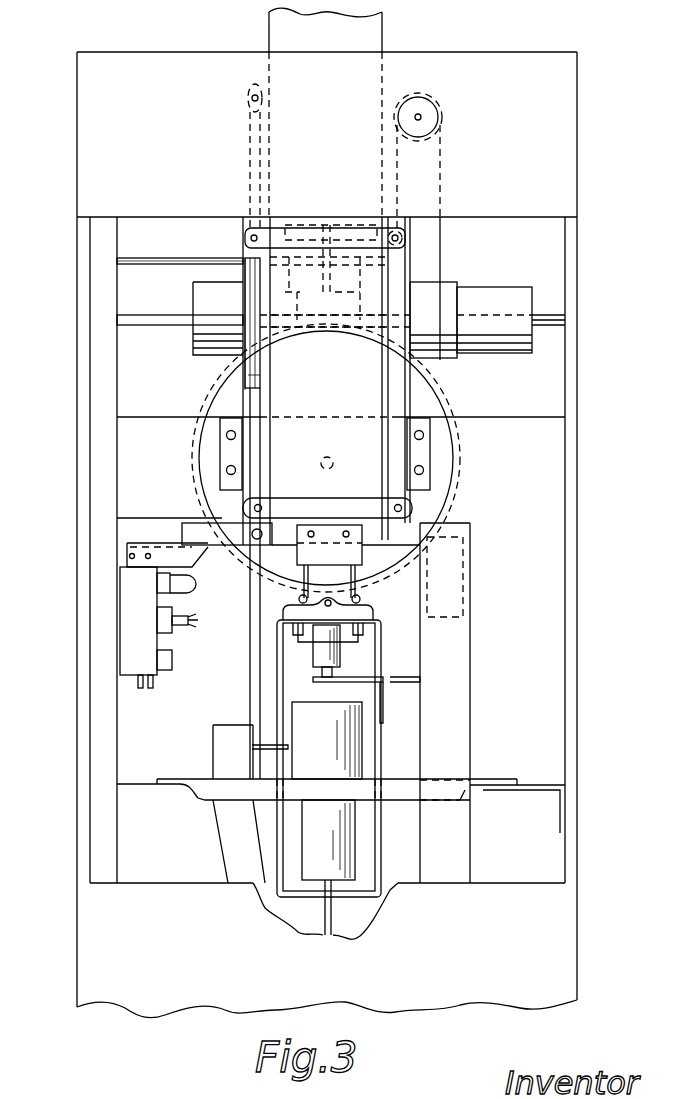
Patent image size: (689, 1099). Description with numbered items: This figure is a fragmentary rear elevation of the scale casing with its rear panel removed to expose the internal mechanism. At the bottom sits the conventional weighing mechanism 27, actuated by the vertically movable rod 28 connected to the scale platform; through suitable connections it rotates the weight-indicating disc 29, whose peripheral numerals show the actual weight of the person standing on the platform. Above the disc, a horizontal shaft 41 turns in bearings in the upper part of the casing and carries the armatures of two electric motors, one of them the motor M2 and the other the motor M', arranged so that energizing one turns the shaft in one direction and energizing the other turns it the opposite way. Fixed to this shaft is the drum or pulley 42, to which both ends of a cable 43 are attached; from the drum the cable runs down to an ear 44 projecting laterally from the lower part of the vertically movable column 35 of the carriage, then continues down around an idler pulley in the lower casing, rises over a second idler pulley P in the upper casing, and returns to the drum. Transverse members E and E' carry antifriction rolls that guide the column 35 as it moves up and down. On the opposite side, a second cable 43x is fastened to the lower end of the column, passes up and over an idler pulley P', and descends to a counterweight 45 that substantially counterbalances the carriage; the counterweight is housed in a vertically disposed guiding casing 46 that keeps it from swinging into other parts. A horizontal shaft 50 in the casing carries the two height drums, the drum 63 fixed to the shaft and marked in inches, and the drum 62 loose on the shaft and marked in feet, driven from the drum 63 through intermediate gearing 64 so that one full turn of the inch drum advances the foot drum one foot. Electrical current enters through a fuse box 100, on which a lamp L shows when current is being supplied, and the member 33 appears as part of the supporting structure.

The column 35 is at (384, 38).
The idler pulley P is at (227, 155).
The idler pulley P' is at (438, 226).
The drum 62 is at (300, 228).
The drum 63 is at (345, 240).
The intermediate gearing 64 is at (332, 228).
The transverse member E is at (399, 218).
The horizontal shaft 50 is at (162, 258).
The horizontal shaft 41 is at (162, 305).
The drum or pulley 42 is at (251, 275).
The electric motor M2 is at (468, 292).
The motor M' is at (511, 303).
The cable 43 is at (262, 411).
The second cable 43x is at (386, 426).
The weight-indicating disc 29 is at (462, 472).
The vertically movable rod 28 is at (327, 457).
The transverse member E' is at (329, 528).
The ear 44 is at (265, 521).
The guiding casing 46 is at (471, 712).
The counterweight 45 is at (462, 570).
The weighing mechanism 27 is at (392, 646).
The fuse box 100 is at (130, 620).
The lamp L is at (178, 592).
The base plate 33 is at (228, 848).